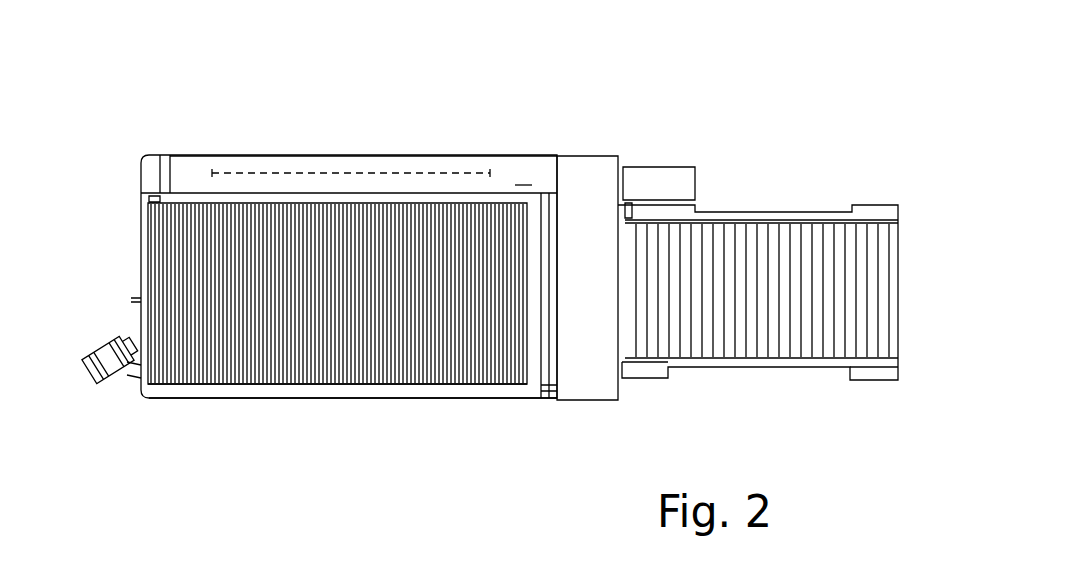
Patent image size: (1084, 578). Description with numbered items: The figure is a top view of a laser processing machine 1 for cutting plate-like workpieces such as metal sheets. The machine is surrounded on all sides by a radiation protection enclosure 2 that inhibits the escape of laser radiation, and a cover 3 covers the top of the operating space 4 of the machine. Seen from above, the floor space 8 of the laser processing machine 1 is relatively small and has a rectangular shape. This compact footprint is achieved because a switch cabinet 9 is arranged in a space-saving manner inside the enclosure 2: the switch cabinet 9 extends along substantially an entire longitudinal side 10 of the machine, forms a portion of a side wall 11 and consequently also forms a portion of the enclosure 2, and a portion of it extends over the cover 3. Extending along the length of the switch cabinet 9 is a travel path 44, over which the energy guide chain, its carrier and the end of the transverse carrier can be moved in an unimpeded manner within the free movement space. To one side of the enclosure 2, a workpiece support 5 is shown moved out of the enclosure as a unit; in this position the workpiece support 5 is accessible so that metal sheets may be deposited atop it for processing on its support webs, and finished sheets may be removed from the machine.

The laser processing machine 1 is at (265, 139).
The radiation protection enclosure 2 is at (451, 400).
The cover 3 is at (331, 385).
The operating space 4 is at (259, 346).
The workpiece support 5 is at (785, 198).
The floor space 8 is at (580, 150).
The switch cabinet 9 is at (523, 173).
The longitudinal side 10 is at (418, 130).
The side wall 11 is at (362, 155).
The travel path 44 is at (465, 158).